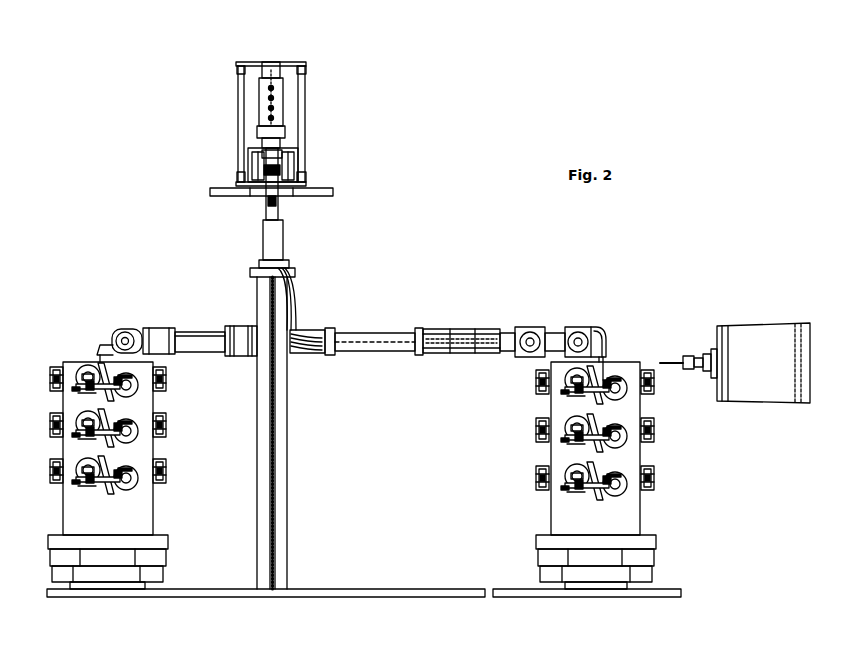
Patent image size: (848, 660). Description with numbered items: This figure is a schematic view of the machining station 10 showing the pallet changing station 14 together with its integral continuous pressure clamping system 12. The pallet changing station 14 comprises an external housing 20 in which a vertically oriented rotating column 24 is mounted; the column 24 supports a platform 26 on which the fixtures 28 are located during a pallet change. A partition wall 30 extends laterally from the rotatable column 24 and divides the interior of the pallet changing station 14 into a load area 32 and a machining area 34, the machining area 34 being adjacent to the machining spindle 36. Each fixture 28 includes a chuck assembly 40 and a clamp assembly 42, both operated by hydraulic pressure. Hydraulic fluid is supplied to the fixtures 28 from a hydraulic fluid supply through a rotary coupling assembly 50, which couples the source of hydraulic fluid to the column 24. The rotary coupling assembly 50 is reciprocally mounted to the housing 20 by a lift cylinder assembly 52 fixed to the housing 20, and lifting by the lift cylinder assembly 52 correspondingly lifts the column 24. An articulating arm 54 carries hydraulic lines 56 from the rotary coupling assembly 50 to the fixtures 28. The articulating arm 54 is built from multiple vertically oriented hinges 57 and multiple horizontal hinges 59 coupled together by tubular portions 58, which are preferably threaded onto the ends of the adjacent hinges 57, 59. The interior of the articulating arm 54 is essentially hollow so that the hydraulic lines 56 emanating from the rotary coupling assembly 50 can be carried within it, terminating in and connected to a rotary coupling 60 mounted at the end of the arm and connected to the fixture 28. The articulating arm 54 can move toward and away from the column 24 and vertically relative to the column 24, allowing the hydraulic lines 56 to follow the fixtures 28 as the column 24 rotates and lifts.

The apparatus 10 is at (469, 199).
The light source assembly 12 is at (693, 320).
The pallet changing station 14 is at (213, 272).
The external housing 20 is at (330, 189).
The rotating column 24 is at (288, 471).
The platform 26 is at (437, 598).
The fixtures 28 is at (63, 521).
The partition wall 30 is at (277, 535).
The load area 32 is at (227, 465).
The machining area 34 is at (397, 465).
The machining spindle 36 is at (769, 405).
The chuck assembly 40 is at (50, 378).
The clamp assembly 42 is at (88, 366).
The rotary coupling assembly 50 is at (308, 122).
The lift cylinder assembly 52 is at (250, 158).
The articulating arm 54 is at (370, 356).
The hydraulic lines 56 is at (300, 290).
The vertically oriented hinges 57 is at (306, 330).
The tubular portions 58 is at (362, 332).
The horizontal hinges 59 is at (531, 326).
The rotary coupling 60 is at (606, 358).